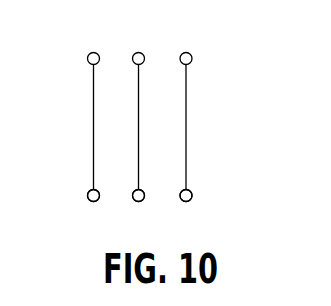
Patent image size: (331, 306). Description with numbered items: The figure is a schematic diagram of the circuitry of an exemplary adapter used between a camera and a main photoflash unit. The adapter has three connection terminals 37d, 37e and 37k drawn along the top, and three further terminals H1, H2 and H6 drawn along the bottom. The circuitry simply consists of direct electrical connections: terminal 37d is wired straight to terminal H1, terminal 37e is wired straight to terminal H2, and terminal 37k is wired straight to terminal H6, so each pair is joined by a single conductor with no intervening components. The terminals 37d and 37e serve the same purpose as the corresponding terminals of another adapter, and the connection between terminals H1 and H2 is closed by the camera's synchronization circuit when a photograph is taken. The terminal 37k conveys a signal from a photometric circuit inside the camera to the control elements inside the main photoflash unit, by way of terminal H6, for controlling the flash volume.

The connection terminal 37d is at (76, 110).
The connection terminal 37e is at (136, 110).
The connection terminal 37k is at (202, 110).
The terminal H1 is at (87, 214).
The terminal H2 is at (137, 214).
The terminal H6 is at (196, 214).